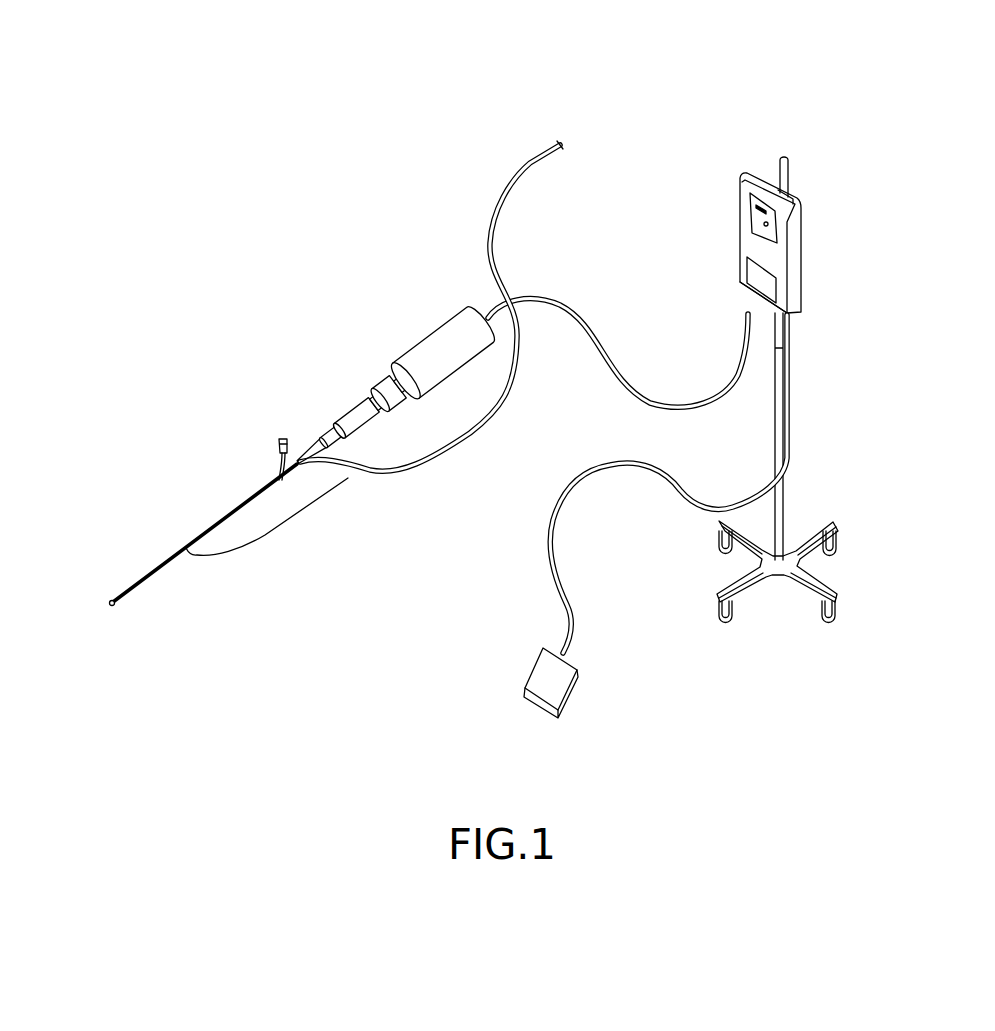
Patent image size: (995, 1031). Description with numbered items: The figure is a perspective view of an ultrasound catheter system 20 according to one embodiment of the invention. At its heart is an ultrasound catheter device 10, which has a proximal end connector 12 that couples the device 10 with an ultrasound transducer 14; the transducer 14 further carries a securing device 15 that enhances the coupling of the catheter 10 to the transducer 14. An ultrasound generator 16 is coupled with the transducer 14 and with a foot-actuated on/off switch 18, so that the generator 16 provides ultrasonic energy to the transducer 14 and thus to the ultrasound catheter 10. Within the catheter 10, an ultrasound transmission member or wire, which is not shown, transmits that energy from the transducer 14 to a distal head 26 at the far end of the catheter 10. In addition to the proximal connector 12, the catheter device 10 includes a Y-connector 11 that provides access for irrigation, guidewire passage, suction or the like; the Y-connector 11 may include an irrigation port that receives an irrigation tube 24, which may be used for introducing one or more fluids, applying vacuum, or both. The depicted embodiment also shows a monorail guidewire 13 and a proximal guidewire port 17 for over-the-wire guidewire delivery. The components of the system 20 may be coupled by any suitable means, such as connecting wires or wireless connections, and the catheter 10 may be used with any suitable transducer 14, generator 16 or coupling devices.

The ultrasound catheter device 10 is at (283, 301).
The Y-connector 11 is at (316, 448).
The proximal end connector 12 is at (354, 406).
The monorail guidewire 13 is at (253, 548).
The ultrasound transducer 14 is at (432, 346).
The securing device 15 is at (398, 402).
The ultrasound generator 16 is at (802, 212).
The proximal guidewire port 17 is at (277, 441).
The foot-actuated on/off switch 18 is at (570, 697).
The ultrasound catheter system 20 is at (766, 61).
The irrigation tube 24 is at (531, 165).
The distal head 26 is at (111, 601).